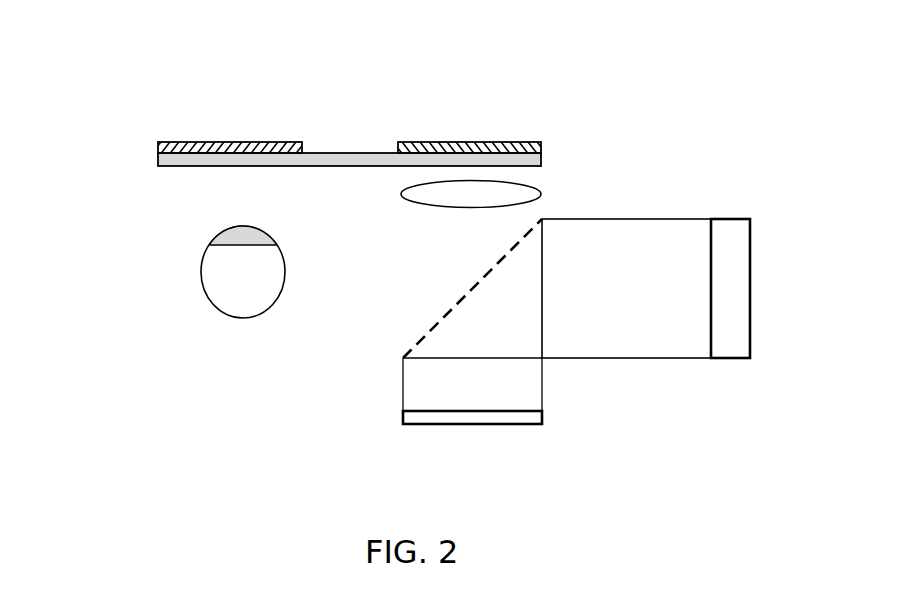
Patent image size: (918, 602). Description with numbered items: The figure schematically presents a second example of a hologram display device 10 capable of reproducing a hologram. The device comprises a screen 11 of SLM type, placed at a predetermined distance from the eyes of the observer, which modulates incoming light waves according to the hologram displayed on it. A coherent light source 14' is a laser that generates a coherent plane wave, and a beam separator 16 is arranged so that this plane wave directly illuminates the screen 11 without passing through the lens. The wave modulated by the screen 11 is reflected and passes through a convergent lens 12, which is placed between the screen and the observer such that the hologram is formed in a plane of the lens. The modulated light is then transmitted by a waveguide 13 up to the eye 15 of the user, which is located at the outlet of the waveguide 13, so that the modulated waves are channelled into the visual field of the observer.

The display device 10 is at (117, 104).
The screen 11 is at (542, 417).
The convergent lens 12 is at (541, 194).
The waveguide 13 is at (161, 166).
The coherent light source 14' is at (769, 288).
The eye of the user 15 is at (209, 299).
The beam separator 16 is at (403, 358).